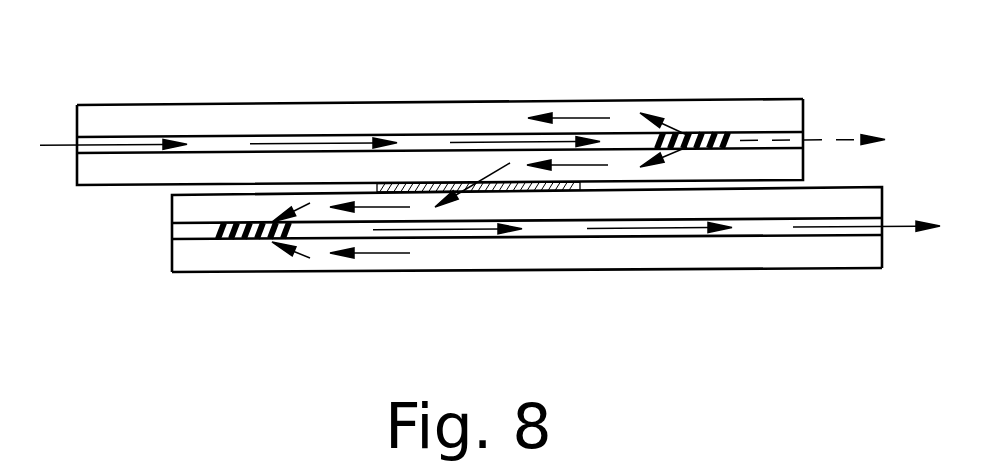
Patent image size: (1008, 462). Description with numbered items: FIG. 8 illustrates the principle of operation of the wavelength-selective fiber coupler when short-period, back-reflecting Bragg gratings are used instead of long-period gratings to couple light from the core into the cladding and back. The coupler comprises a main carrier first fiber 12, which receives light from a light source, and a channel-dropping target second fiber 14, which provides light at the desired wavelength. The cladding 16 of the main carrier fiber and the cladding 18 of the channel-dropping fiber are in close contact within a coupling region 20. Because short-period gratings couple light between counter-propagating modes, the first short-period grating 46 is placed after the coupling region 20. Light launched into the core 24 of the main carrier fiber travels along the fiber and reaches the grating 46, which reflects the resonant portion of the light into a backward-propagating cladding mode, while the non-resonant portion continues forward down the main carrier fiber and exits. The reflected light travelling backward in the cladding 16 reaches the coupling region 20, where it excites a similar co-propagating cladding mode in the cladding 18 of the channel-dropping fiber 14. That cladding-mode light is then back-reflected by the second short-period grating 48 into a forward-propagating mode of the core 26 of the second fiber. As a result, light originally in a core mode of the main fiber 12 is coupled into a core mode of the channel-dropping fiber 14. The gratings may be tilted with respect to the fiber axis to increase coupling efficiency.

The main carrier first fiber 12 is at (302, 102).
The channel-dropping target second fiber 14 is at (485, 272).
The cladding of the main carrier fiber 16 is at (148, 118).
The cladding of the channel-dropping fiber 18 is at (812, 252).
The coupling region 20 is at (550, 192).
The core of the main carrier fiber 24 is at (402, 142).
The core of the second fiber 26 is at (187, 232).
The short-period grating 46 is at (717, 138).
The short-period grating 48 is at (233, 242).